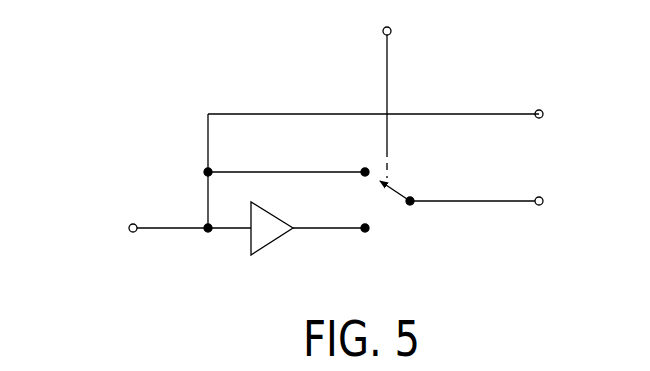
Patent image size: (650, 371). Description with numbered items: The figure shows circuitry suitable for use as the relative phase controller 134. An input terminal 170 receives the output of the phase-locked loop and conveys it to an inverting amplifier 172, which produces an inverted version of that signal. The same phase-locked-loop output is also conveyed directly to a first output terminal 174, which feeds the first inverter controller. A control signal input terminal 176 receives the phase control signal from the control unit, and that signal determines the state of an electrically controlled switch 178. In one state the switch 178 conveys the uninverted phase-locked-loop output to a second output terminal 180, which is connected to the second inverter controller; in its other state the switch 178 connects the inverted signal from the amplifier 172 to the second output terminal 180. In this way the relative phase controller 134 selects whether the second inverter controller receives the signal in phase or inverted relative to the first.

The relative phase controller 134 is at (195, 66).
The input terminal 170 is at (137, 233).
The inverting amplifier 172 is at (262, 248).
The first output terminal 174 is at (538, 109).
The control signal input terminal 176 is at (383, 31).
The electrically controlled switch 178 is at (394, 218).
The second output terminal 180 is at (541, 206).